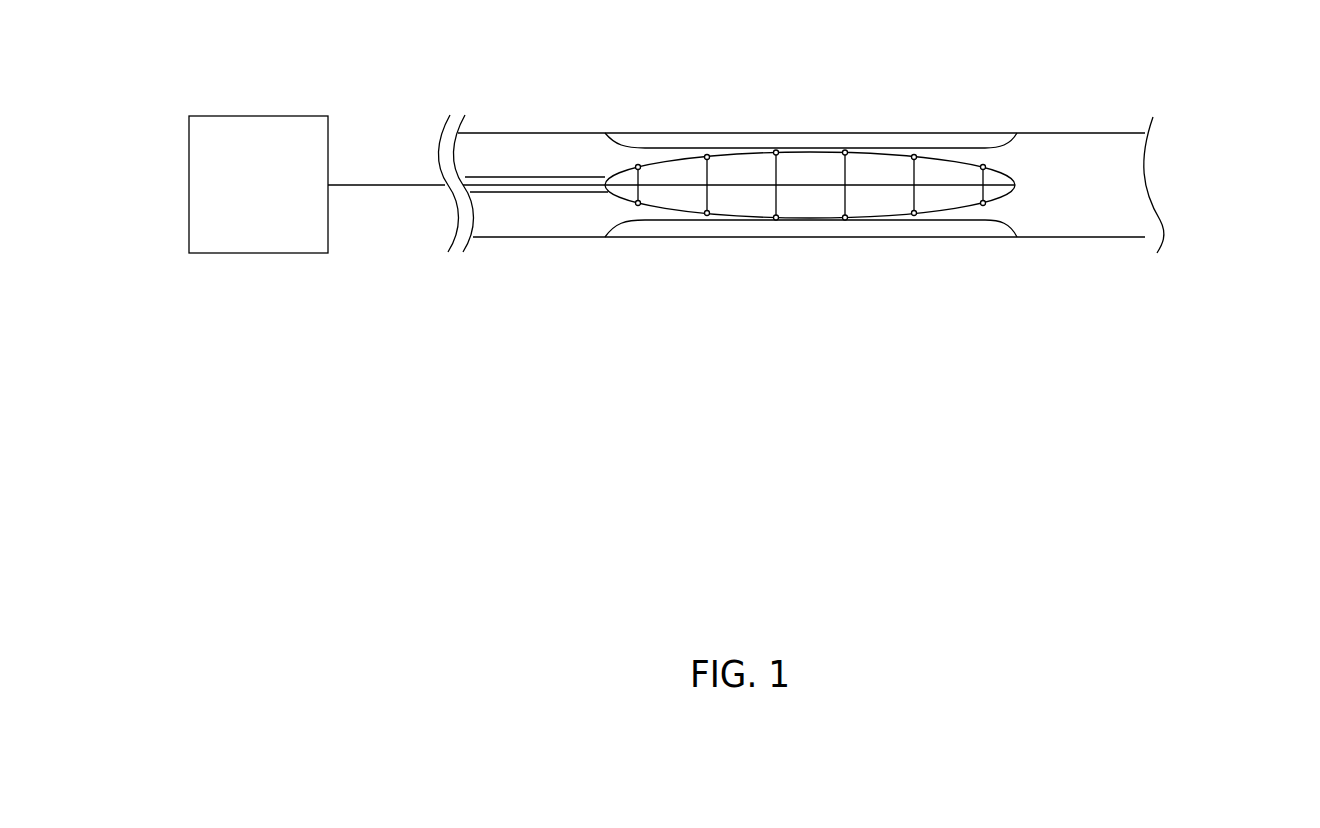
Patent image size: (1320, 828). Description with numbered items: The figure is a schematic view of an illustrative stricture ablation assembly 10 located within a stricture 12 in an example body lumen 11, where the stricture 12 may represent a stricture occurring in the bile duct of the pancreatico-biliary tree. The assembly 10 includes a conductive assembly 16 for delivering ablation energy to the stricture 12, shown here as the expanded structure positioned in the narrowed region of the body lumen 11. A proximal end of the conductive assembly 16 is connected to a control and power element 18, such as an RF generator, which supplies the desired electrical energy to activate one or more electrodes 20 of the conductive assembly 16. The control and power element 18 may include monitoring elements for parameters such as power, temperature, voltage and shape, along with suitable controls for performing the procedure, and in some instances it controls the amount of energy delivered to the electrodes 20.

The stricture ablation assembly 10 is at (796, 187).
The body lumen 11 is at (1138, 191).
The stricture 12 is at (880, 148).
The conductive assembly 16 is at (1000, 213).
The control and power element 18 is at (259, 116).
The electrodes 20 is at (707, 213).